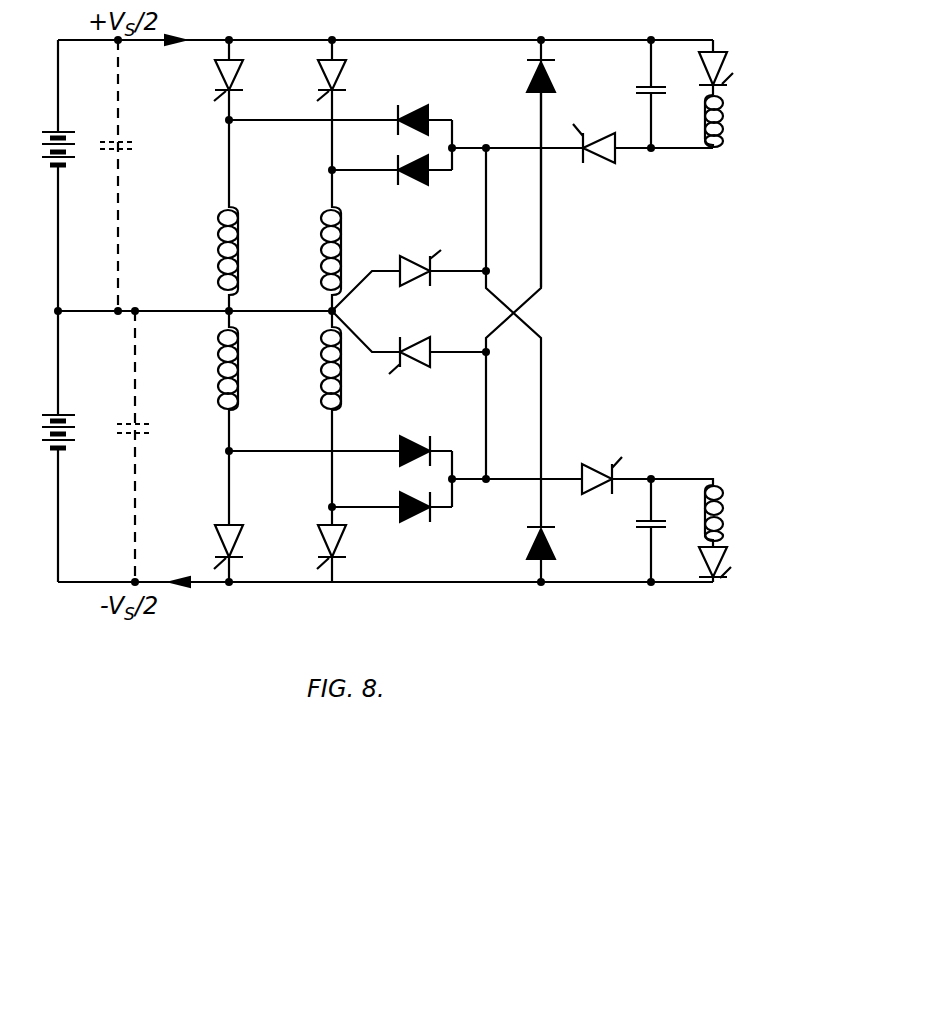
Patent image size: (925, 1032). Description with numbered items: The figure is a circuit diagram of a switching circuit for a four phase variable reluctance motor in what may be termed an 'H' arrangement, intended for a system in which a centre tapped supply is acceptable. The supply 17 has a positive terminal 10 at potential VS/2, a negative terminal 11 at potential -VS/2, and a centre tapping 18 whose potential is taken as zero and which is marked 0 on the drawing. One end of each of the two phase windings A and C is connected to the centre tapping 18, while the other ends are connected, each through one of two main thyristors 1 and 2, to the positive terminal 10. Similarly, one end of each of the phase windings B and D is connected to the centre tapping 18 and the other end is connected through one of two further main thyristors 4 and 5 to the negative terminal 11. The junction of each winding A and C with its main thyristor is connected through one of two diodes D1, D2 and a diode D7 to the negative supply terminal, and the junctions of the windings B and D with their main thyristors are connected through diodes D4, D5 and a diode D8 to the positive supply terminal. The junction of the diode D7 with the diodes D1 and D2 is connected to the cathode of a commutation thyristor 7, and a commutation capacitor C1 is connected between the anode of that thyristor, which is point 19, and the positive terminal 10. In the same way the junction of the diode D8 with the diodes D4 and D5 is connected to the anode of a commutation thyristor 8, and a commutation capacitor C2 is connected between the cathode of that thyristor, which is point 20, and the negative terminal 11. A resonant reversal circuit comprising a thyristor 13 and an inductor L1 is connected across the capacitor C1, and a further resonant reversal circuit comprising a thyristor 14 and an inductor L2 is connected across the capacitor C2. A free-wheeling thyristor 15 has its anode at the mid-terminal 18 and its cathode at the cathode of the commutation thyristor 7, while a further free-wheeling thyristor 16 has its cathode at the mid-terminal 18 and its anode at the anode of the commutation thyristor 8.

The main thyristor 1 is at (242, 78).
The main thyristor 2 is at (345, 78).
The further main thyristor 4 is at (215, 537).
The further main thyristor 5 is at (318, 537).
The commutation thyristor 7 is at (597, 122).
The commutation thyristor 8 is at (600, 466).
The positive terminal 10 is at (253, 40).
The negative terminal 11 is at (258, 582).
The thyristor 13 is at (702, 62).
The thyristor 14 is at (698, 548).
The free-wheeling thyristor 15 is at (412, 264).
The further free-wheeling thyristor 16 is at (412, 345).
The supply 17 is at (82, 160).
The centre tapping 18 is at (58, 311).
The point 19 is at (630, 150).
The point 20 is at (634, 479).
The zero potential line 0 is at (135, 311).
The phase winding A is at (218, 243).
The phase winding B is at (216, 365).
The phase winding C is at (321, 248).
The phase winding D is at (321, 360).
The diode D1 is at (418, 108).
The diode D2 is at (417, 185).
The diode D4 is at (416, 518).
The diode D5 is at (416, 446).
The diode D7 is at (528, 542).
The diode D8 is at (526, 80).
The commutation capacitor C1 is at (636, 88).
The commutation capacitor C2 is at (636, 525).
The inductor L1 is at (700, 112).
The inductor L2 is at (702, 506).